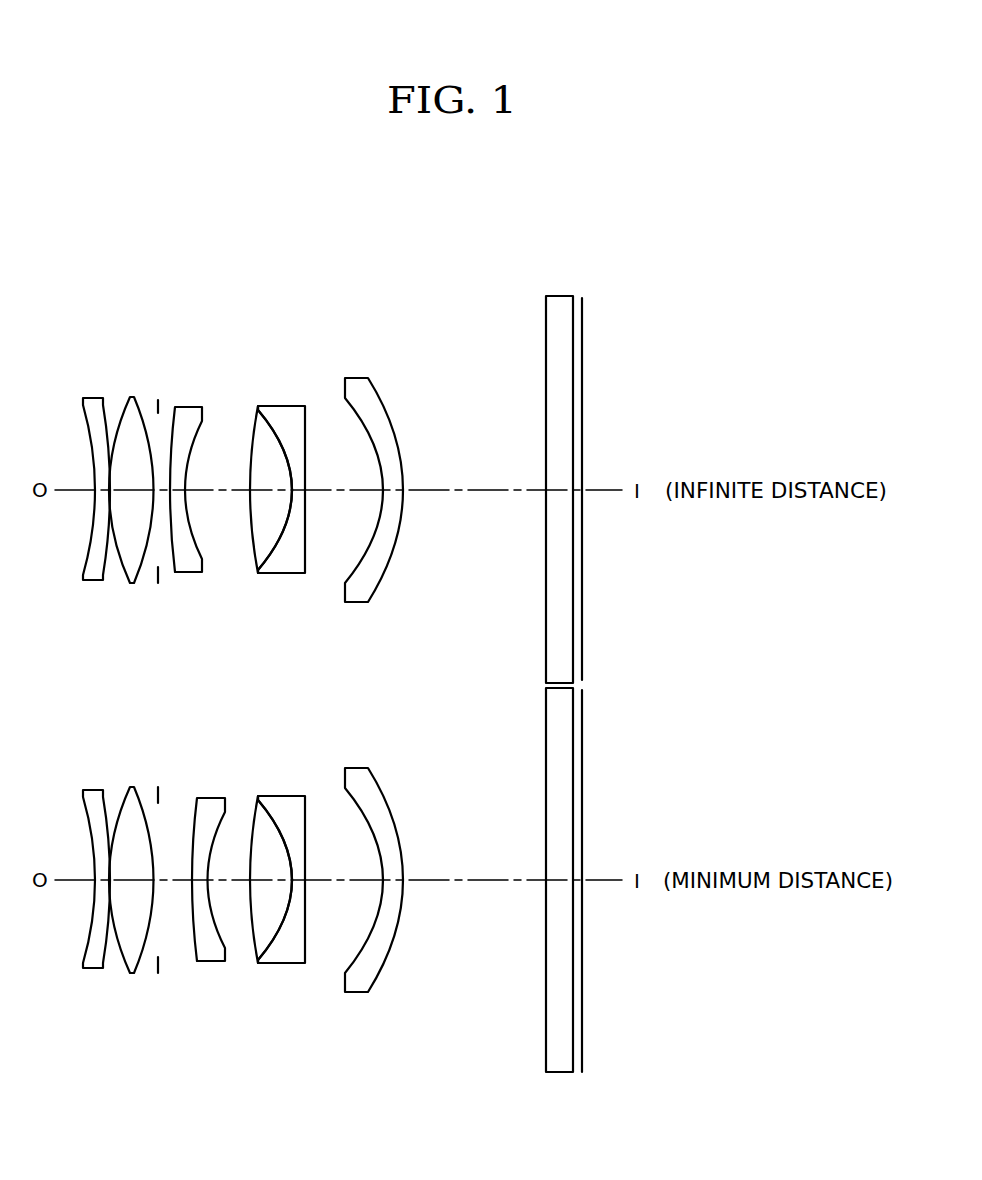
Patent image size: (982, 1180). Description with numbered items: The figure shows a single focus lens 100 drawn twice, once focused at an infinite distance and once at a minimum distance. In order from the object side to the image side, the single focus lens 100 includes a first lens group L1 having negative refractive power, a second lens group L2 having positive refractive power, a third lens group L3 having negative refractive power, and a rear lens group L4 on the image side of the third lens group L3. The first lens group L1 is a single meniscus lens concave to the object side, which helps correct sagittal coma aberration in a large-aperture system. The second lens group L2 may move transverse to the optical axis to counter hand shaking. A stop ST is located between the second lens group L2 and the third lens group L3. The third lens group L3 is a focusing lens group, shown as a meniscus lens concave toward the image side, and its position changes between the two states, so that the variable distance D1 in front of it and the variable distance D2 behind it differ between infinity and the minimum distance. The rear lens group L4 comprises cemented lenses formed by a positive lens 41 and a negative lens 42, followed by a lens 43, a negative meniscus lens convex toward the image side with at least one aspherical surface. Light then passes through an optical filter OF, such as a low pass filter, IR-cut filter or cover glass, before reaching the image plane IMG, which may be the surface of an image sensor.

The single focus lens 100 is at (606, 279).
The first lens group L1 is at (88, 402).
The second lens group L2 is at (132, 400).
The stop ST is at (158, 395).
The third lens group L3 is at (188, 408).
The variable distance D1 is at (160, 493).
The variable distance D2 is at (223, 493).
The rear lens group L4 is at (385, 364).
The positive lens 41 is at (267, 530).
The negative lens 42 is at (292, 569).
The lens 43 is at (355, 594).
The optical filter OF is at (560, 300).
The image plane IMG is at (584, 333).